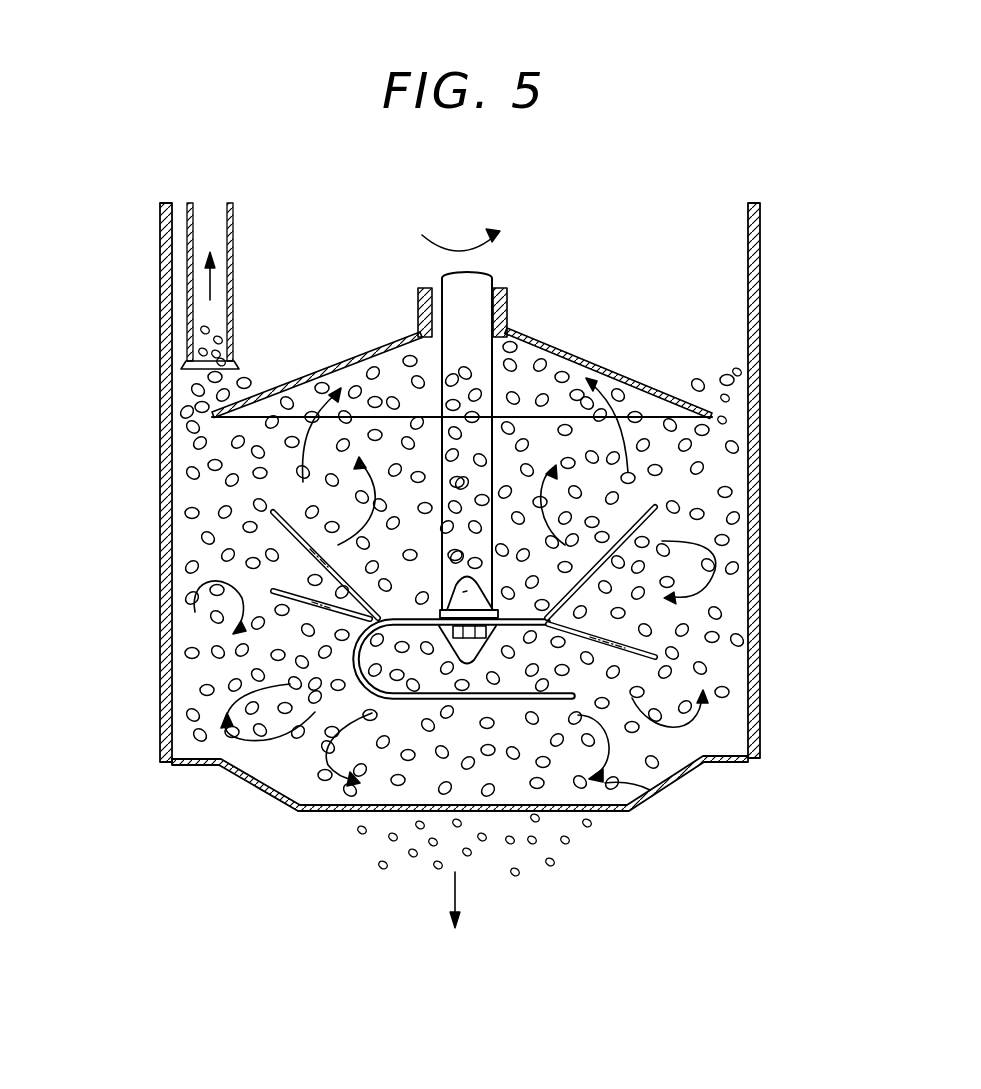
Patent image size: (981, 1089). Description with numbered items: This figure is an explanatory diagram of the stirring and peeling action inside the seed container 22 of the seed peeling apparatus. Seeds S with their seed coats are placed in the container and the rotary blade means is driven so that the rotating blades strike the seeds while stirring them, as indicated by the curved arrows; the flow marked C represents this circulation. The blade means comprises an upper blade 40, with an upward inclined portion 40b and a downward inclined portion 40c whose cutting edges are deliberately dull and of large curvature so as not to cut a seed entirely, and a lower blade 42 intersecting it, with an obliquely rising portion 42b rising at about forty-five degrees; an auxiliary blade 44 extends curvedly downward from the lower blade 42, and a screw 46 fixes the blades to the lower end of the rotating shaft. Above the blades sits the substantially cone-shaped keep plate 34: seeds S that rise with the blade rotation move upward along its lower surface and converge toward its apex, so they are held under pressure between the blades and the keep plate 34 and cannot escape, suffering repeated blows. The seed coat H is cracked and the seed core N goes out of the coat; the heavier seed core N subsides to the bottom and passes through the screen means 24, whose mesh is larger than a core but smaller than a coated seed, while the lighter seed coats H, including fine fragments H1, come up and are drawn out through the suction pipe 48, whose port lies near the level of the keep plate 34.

The seed container 22 is at (760, 312).
The screen means 24 is at (253, 783).
The keep plate 34 is at (565, 355).
The upper blade 40 is at (467, 625).
The upward inclined portion 40b is at (468, 590).
The downward inclined portion 40c is at (655, 657).
The lower blade 42 is at (573, 597).
The obliquely rising portion 42b is at (373, 614).
The auxiliary blade 44 is at (538, 700).
The screw 46 is at (482, 634).
The suction pipe 48 is at (232, 240).
The seed coat H is at (247, 380).
The hot fine particle H1 is at (225, 392).
The seed S is at (704, 513).
The seed core N is at (413, 853).
The circulation flow C is at (689, 572).